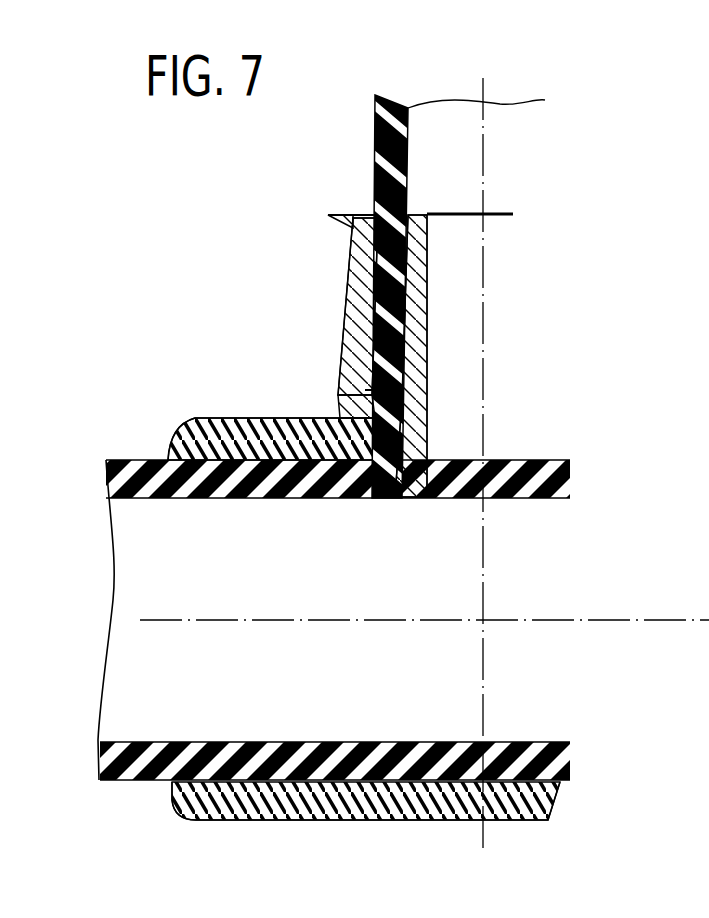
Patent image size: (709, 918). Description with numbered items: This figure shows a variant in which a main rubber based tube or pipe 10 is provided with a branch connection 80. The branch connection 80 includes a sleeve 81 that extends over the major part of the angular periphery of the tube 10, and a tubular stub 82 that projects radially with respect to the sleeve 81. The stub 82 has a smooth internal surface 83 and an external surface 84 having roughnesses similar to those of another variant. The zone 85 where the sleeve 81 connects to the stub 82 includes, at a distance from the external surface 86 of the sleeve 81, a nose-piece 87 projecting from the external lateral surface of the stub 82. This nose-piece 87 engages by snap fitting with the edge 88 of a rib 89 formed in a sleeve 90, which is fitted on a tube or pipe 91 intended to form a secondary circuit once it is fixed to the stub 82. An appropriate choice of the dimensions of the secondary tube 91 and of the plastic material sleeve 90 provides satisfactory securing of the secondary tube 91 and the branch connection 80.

The main rubber based tube or pipe 10 is at (133, 770).
The branch connection 80 is at (268, 390).
The sleeve 81 is at (345, 816).
The tubular stub 82 is at (428, 307).
The smooth internal surface 83 is at (428, 353).
The external surface 84 is at (410, 262).
The zone of connection 85 is at (316, 465).
The external surface of sleeve 86 is at (211, 416).
The nose-piece 87 is at (425, 395).
The edge of rib 88 is at (357, 480).
The rib 89 is at (352, 403).
The sleeve 90 is at (355, 258).
The tube or pipe 91 is at (390, 100).